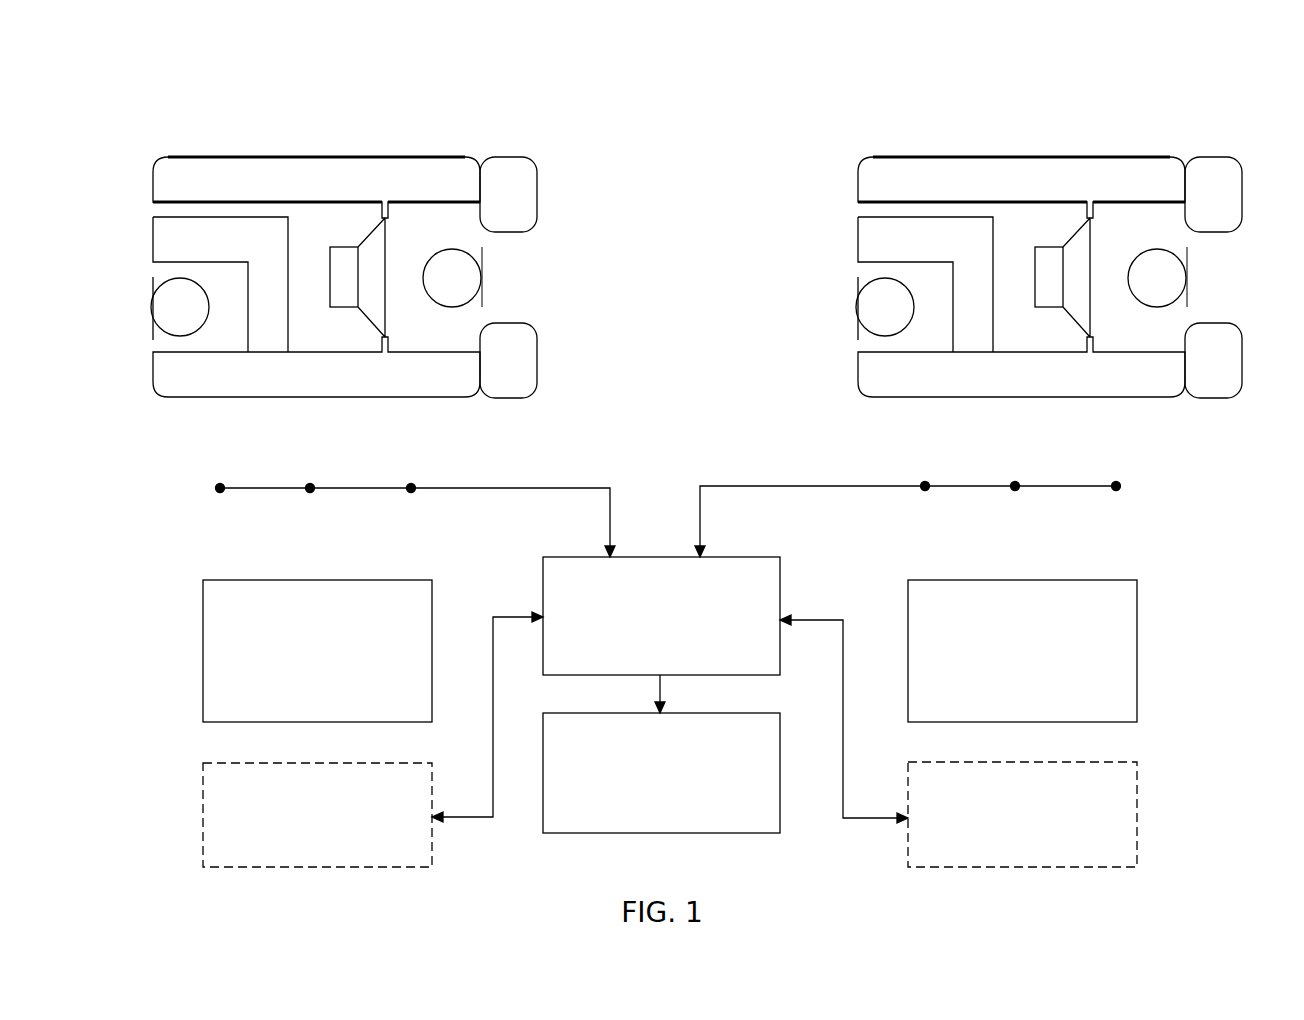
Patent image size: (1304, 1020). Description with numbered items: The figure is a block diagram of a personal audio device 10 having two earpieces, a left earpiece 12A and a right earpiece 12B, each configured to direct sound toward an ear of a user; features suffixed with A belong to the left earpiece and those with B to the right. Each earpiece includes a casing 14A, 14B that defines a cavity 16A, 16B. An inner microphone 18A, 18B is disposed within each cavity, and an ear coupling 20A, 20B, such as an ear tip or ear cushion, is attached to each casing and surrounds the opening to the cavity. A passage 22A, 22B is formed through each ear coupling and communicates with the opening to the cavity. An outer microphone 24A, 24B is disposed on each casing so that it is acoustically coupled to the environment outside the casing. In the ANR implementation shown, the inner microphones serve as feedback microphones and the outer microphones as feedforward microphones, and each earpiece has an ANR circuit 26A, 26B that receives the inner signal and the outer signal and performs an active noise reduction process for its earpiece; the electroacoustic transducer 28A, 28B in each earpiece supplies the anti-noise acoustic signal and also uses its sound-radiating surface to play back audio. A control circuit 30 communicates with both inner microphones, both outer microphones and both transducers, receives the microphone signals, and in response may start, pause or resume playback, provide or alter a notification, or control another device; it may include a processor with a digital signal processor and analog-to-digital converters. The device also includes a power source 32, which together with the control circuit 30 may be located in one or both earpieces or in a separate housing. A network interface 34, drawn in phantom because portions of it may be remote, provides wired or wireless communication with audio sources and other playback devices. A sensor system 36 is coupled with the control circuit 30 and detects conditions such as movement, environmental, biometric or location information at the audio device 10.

The personal audio device 10 is at (725, 53).
The left earpiece 12A is at (368, 304).
The right earpiece 12B is at (1073, 304).
The casing 14A is at (308, 194).
The casing 14B is at (1022, 277).
The cavity 16A is at (522, 318).
The cavity 16B is at (1227, 318).
The inner microphone 18A is at (443, 414).
The inner microphone 18B is at (1148, 414).
The ear coupling 20A is at (487, 209).
The ear coupling 20B is at (1213, 277).
The passage 22A is at (547, 247).
The passage 22B is at (1252, 247).
The outer microphone 24A is at (188, 429).
The outer microphone 24B is at (893, 429).
The ANR circuit 26A is at (298, 671).
The ANR circuit 26B is at (1003, 671).
The electroacoustic transducer 28A is at (347, 399).
The electroacoustic transducer 28B is at (1052, 399).
The control circuit 30 is at (648, 658).
The power source 32 is at (648, 816).
The network interface 34 is at (306, 854).
The sensor system 36 is at (1011, 846).